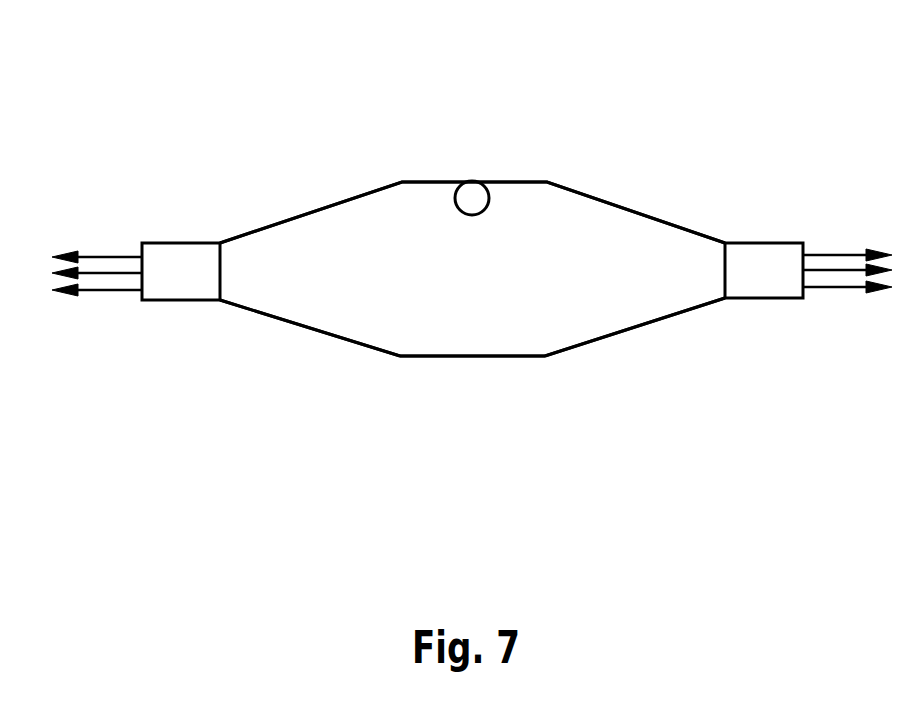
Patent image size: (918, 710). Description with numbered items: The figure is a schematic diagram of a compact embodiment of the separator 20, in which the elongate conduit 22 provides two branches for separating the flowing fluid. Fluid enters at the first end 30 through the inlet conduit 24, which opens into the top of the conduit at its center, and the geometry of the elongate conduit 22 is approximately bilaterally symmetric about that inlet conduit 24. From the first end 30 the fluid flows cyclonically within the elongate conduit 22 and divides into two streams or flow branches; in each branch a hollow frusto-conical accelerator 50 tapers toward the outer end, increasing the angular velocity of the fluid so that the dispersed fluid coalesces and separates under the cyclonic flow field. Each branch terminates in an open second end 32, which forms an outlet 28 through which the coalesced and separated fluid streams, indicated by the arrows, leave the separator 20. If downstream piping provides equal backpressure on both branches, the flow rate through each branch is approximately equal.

The separator 20 is at (478, 133).
The elongate conduit 22 is at (612, 202).
The inlet conduit 24 is at (456, 185).
The outlet 28 is at (140, 292).
The first end 30 is at (460, 331).
The second end 32 is at (186, 286).
The frusto-conical accelerator 50 is at (310, 305).